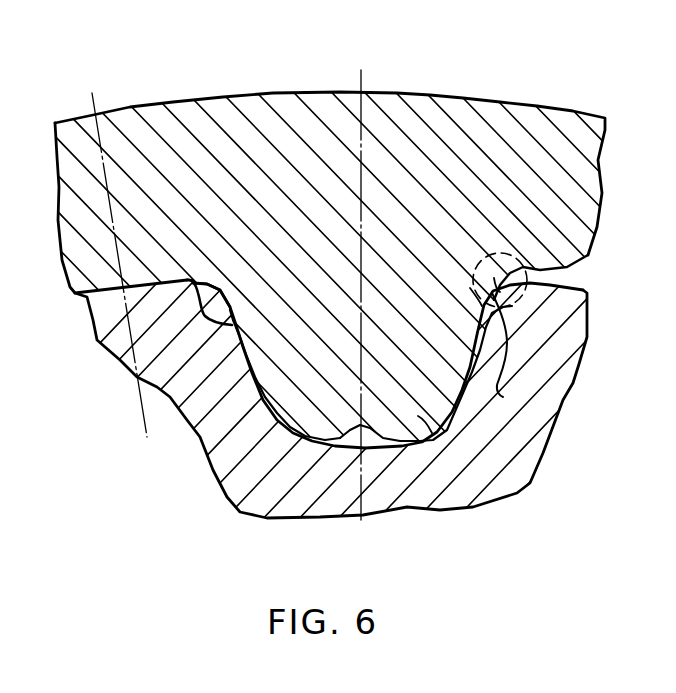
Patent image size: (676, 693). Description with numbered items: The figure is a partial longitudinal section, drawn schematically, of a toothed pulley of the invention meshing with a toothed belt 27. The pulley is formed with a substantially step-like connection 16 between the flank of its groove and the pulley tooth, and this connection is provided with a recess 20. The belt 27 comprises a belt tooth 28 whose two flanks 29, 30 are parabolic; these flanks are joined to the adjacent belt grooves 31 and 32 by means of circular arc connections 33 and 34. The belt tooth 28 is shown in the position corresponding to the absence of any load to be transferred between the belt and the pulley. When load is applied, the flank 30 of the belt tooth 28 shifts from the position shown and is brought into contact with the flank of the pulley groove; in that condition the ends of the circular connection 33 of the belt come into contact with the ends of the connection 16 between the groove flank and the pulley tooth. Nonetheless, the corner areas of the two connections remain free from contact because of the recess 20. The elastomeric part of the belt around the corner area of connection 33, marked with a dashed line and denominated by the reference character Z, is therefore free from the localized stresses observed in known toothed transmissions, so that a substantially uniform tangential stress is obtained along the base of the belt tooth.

The step-like connection 16 is at (513, 303).
The recess 20 is at (503, 397).
The toothed belt 27 is at (452, 112).
The belt tooth 28 is at (428, 430).
The parabolic flank 29 is at (263, 387).
The parabolic flank 30 is at (443, 385).
The groove 31 is at (470, 288).
The groove 32 is at (221, 290).
The circular arc connection 33 is at (494, 278).
The circular arc connection 34 is at (190, 281).
The corner area of connection 33 Z is at (588, 255).